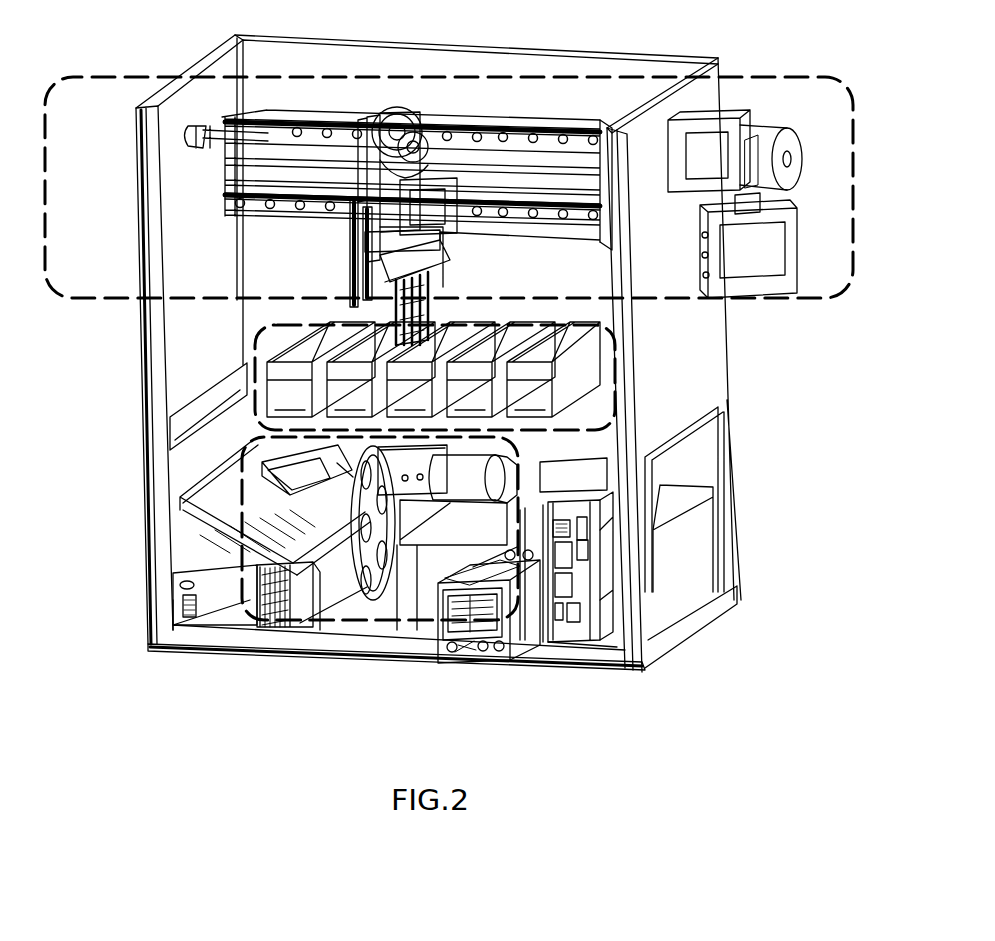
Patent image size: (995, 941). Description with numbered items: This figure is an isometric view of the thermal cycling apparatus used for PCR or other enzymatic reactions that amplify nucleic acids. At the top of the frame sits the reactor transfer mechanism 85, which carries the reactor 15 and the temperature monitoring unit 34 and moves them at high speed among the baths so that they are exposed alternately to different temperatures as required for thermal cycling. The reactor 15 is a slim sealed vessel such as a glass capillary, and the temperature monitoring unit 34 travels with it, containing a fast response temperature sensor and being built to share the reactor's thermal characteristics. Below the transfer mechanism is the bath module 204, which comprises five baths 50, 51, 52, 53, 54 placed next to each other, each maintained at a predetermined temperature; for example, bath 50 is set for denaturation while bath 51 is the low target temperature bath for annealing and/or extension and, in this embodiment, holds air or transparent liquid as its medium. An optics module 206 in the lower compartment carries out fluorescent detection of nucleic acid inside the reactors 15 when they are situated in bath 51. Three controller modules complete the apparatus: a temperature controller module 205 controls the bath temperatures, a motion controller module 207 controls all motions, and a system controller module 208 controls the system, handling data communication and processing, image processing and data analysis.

The reactor transfer mechanism 85 is at (758, 68).
The reactor 15 is at (454, 300).
The temperature monitoring unit 34 is at (432, 297).
The bath 50 is at (553, 369).
The bath 51 is at (321, 369).
The bath 52 is at (501, 369).
The bath 53 is at (441, 369).
The bath 54 is at (381, 369).
The bath module 204 is at (614, 416).
The temperature controller module 205 is at (460, 640).
The optics module 206 is at (518, 520).
The motion controller module 207 is at (710, 569).
The system controller module 208 is at (565, 628).